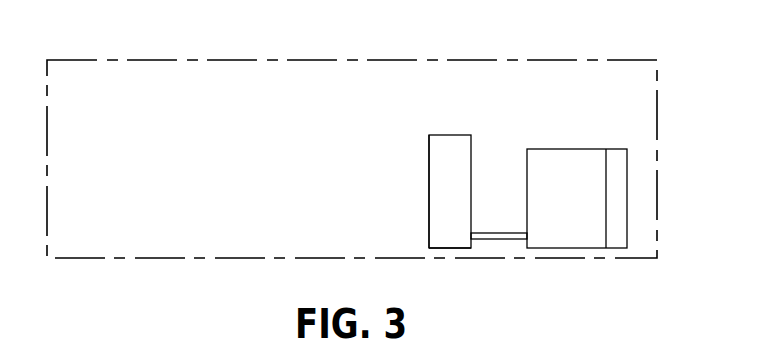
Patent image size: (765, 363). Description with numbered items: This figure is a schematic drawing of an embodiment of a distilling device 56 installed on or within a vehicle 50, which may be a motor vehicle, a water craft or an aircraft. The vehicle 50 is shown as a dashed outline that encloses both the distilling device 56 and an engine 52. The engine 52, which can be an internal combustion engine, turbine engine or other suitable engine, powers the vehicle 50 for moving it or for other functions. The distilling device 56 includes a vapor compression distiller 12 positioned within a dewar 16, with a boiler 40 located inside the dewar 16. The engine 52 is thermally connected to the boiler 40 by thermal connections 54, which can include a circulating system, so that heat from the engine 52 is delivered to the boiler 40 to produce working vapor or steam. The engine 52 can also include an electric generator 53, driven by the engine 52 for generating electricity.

The vehicle 50 is at (392, 60).
The distilling device 56 is at (478, 96).
The vapor compression distiller 12 is at (445, 153).
The dewar 16 is at (429, 176).
The engine 52 is at (569, 165).
The electric generator 53 is at (613, 243).
The thermal connections 54 is at (501, 233).
The boiler 40 is at (449, 243).